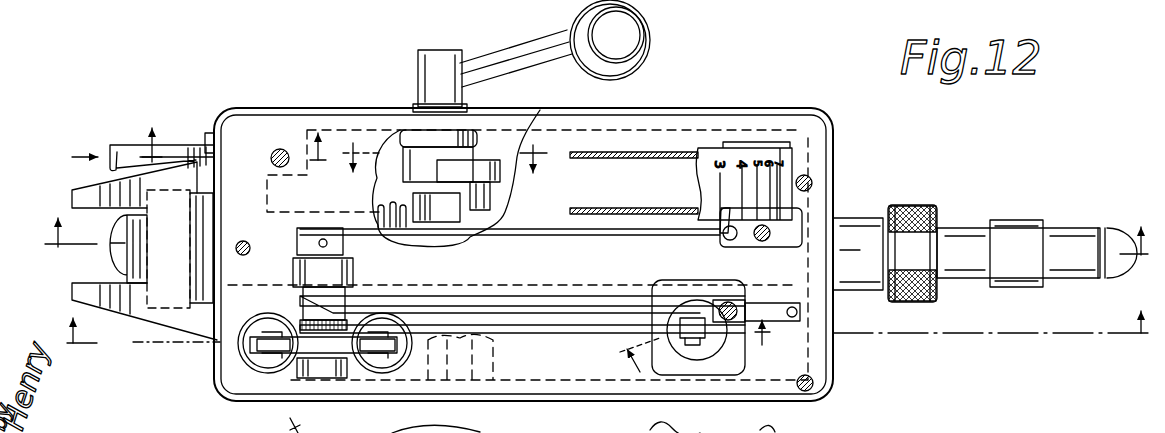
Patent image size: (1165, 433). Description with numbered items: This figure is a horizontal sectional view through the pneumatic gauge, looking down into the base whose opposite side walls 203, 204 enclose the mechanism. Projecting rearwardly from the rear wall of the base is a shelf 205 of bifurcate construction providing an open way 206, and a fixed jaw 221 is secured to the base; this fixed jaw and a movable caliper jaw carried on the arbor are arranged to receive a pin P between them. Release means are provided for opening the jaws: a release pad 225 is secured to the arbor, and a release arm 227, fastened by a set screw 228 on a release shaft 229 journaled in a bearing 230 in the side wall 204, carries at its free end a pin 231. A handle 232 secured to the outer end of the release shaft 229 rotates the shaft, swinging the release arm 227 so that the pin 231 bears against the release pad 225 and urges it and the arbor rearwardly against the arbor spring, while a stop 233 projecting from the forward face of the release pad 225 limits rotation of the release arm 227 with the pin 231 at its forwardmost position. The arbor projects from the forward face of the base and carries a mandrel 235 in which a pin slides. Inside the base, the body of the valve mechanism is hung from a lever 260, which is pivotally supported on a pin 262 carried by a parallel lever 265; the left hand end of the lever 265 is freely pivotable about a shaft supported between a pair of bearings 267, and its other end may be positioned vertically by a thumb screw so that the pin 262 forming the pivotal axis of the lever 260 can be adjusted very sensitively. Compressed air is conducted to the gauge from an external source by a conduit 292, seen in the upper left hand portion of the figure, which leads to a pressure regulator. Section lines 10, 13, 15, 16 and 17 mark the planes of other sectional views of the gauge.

The section line 10- 10 is at (607, 341).
The section line 13- 13 is at (593, 239).
The section line 15- 15 is at (691, 350).
The section line 16- 16 is at (211, 129).
The section line 17- 17 is at (449, 169).
The side wall 203 is at (524, 398).
The side wall 204 is at (647, 112).
The shelf 205 is at (97, 183).
The open way 206 is at (88, 225).
The fixed jaw 221 is at (207, 303).
The release pad 225 is at (445, 218).
The release arm 227 is at (515, 162).
The set screw 228 is at (378, 186).
The release shaft 229 is at (427, 78).
The bearing 230 is at (465, 133).
The pin 231 is at (490, 194).
The handle 232 is at (505, 52).
The stop 233 is at (458, 196).
The mandrel 235 is at (972, 204).
The lever 260 is at (520, 335).
The pin 262 is at (681, 343).
The lever 265 is at (543, 304).
The bearings 267 is at (387, 265).
The conduit 292 is at (118, 147).
The pin P is at (167, 303).